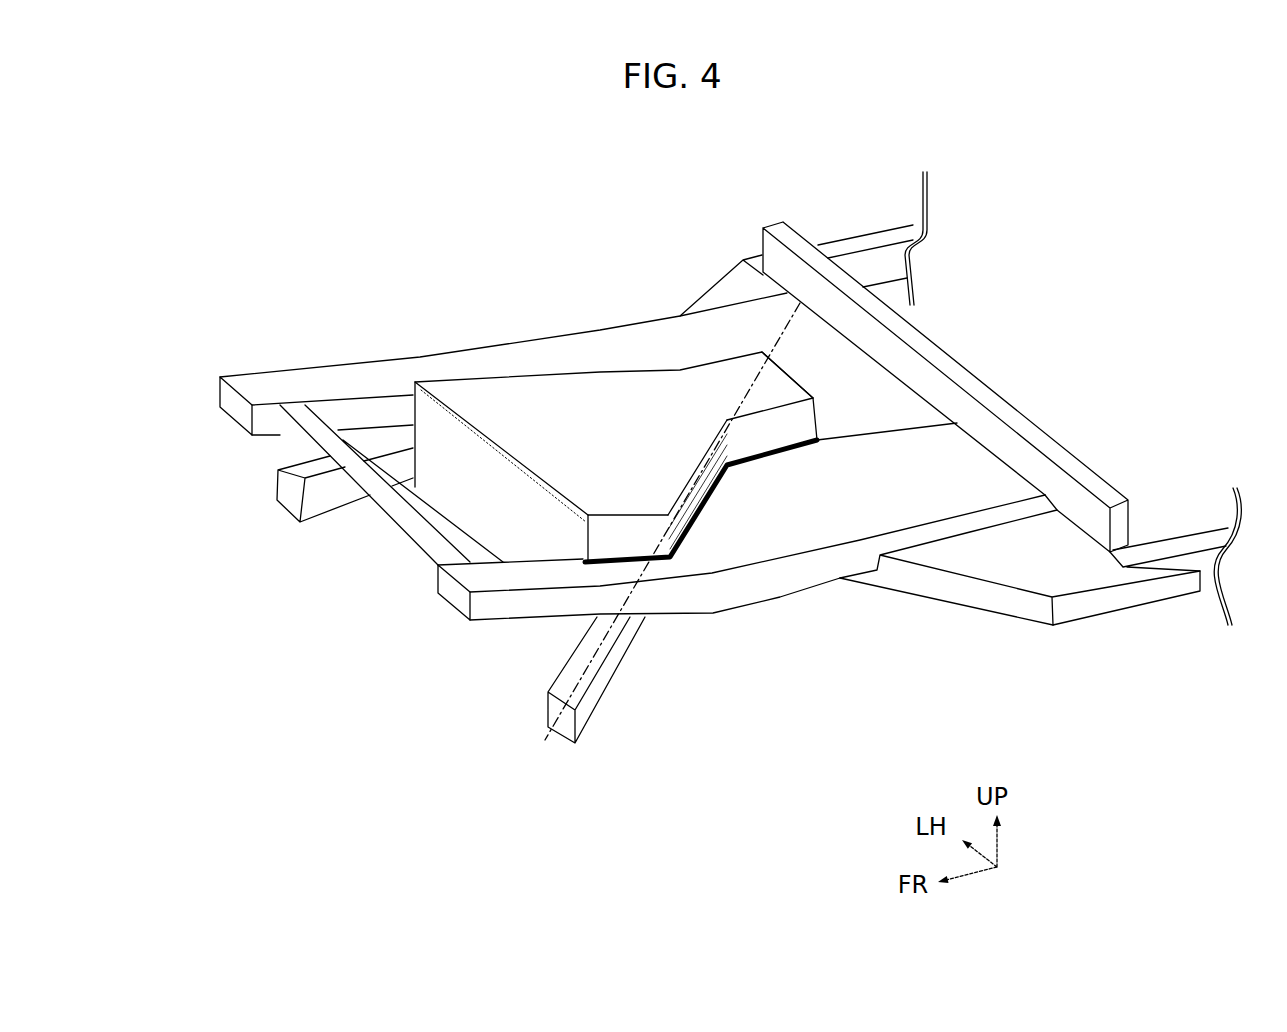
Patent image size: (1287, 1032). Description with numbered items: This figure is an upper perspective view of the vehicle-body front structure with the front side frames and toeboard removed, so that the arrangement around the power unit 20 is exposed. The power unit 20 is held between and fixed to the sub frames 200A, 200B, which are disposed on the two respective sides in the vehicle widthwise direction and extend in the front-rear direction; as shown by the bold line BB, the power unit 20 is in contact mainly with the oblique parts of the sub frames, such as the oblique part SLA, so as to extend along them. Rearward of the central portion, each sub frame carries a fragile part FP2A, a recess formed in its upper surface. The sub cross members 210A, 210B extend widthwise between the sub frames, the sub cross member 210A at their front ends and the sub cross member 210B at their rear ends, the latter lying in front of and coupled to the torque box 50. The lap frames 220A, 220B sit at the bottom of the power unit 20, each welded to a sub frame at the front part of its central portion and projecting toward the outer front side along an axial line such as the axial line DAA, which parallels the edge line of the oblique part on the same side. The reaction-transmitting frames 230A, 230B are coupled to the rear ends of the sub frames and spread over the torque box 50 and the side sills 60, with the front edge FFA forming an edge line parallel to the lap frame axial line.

The power unit 20 is at (515, 405).
The torque box 50 is at (1063, 450).
The side sill 60 is at (850, 250).
The sub frame 200A is at (913, 470).
The sub frame 200B is at (618, 347).
The sub cross member 210A is at (373, 500).
The sub cross member 210B is at (900, 387).
The lap frame 220A is at (600, 690).
The lap frame 220B is at (277, 502).
The reaction-transmitting frame 230A is at (1067, 553).
The reaction-transmitting frame 230B is at (740, 288).
The bold line BB is at (578, 574).
The oblique part SLA is at (725, 515).
The fragile part FP2A is at (738, 578).
The front edge FFA is at (981, 614).
The axial line DAA is at (531, 758).